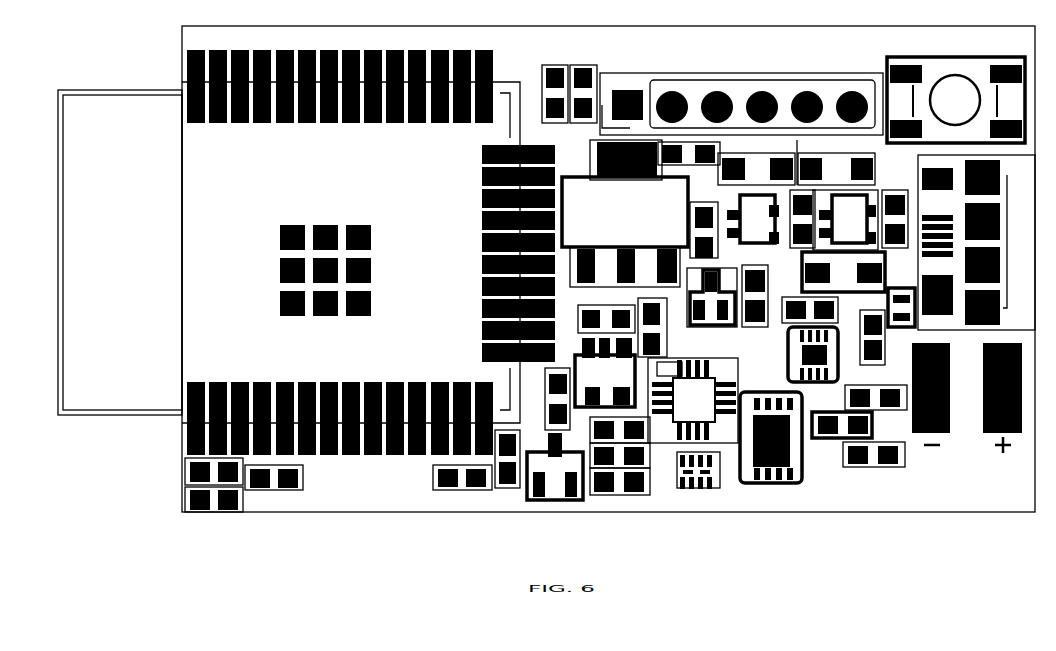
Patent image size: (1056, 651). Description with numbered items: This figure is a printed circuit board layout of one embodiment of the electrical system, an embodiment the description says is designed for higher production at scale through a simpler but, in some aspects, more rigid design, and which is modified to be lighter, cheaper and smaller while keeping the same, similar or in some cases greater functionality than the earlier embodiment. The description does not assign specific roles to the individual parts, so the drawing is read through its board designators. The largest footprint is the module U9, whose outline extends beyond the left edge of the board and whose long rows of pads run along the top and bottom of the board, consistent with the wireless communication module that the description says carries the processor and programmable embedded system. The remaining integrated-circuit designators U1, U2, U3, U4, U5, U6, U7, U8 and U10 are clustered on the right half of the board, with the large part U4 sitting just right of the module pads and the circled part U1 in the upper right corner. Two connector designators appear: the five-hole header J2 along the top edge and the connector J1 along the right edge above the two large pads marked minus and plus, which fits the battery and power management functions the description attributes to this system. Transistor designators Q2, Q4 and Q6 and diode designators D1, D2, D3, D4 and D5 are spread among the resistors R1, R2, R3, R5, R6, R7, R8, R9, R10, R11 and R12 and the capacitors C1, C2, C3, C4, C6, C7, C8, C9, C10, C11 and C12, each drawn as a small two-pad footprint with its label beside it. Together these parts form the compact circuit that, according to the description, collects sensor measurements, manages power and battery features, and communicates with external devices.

The wireless module U9 is at (298, 252).
The integrated circuit U1 is at (956, 100).
The integrated circuit U2 is at (712, 297).
The integrated circuit U3 is at (819, 354).
The integrated circuit U4 is at (625, 213).
The integrated circuit U5 is at (598, 372).
The integrated circuit U6 is at (767, 436).
The integrated circuit U7 is at (554, 466).
The integrated circuit U8 is at (692, 478).
The integrated circuit U10 is at (693, 400).
The connector J1 is at (970, 242).
The connector J2 is at (741, 98).
The transistor Q2 is at (753, 230).
The transistor Q4 is at (845, 227).
The transistor Q6 is at (901, 302).
The diode D1 is at (756, 164).
The diode D2 is at (836, 164).
The diode D3 is at (842, 419).
The diode D4 is at (507, 466).
The diode D5 is at (843, 278).
The resistor R1 is at (895, 226).
The resistor R2 is at (689, 161).
The resistor R3 is at (805, 310).
The resistor R5 is at (755, 290).
The resistor R6 is at (874, 449).
The resistor R7 is at (296, 479).
The resistor R8 is at (590, 94).
The resistor R9 is at (550, 94).
The resistor R10 is at (456, 478).
The resistor R11 is at (876, 392).
The resistor R12 is at (809, 219).
The capacitor C1 is at (872, 332).
The capacitor C2 is at (552, 399).
The capacitor C3 is at (704, 224).
The capacitor C4 is at (661, 369).
The capacitor C6 is at (601, 320).
The capacitor C7 is at (620, 487).
The capacitor C8 is at (256, 485).
The capacitor C9 is at (321, 478).
The capacitor C10 is at (659, 327).
The capacitor C11 is at (630, 455).
The capacitor C12 is at (615, 430).